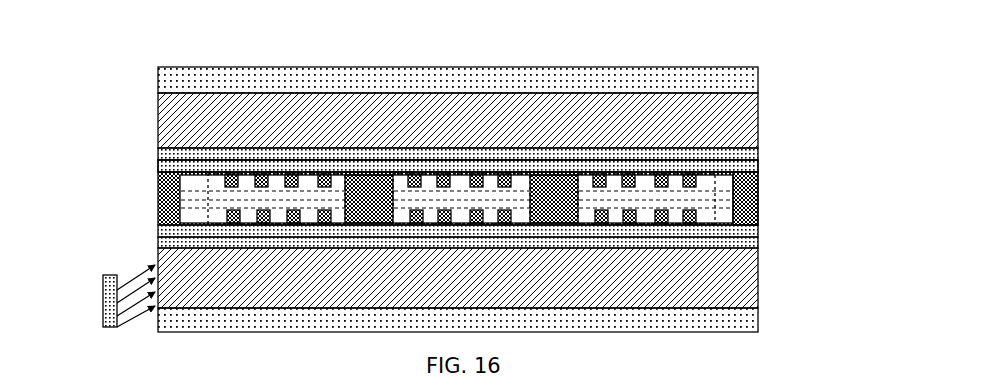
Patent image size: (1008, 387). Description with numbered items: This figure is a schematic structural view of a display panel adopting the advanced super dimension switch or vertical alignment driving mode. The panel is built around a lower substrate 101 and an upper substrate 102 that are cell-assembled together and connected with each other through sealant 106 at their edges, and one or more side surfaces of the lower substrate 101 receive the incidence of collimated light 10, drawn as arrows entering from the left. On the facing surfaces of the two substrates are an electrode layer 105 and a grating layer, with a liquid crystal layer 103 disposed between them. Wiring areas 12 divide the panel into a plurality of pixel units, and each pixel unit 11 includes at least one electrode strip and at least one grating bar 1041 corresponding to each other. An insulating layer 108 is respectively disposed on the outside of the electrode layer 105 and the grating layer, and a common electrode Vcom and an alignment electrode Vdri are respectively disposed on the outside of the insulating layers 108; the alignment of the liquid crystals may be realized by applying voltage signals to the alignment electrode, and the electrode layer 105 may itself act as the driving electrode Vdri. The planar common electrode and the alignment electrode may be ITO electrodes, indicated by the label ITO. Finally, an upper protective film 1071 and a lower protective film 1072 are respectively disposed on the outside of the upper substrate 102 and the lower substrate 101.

The collimated light 10 is at (115, 296).
The pixel unit 11 is at (449, 164).
The wiring area 12 is at (561, 188).
The lower substrate 101 is at (776, 283).
The upper substrate 102 is at (770, 121).
The liquid crystal layer 103 is at (758, 194).
The electrode layer 105 is at (157, 175).
The sealant 106 is at (776, 204).
The insulating layer 108 is at (158, 171).
The grating bar 1041 is at (158, 203).
The upper protective film 1071 is at (776, 79).
The lower protective film 1072 is at (776, 319).
The ITO electrode ITO is at (762, 240).
The alignment electrode Vdri is at (221, 179).
The common electrode Vcom is at (151, 151).